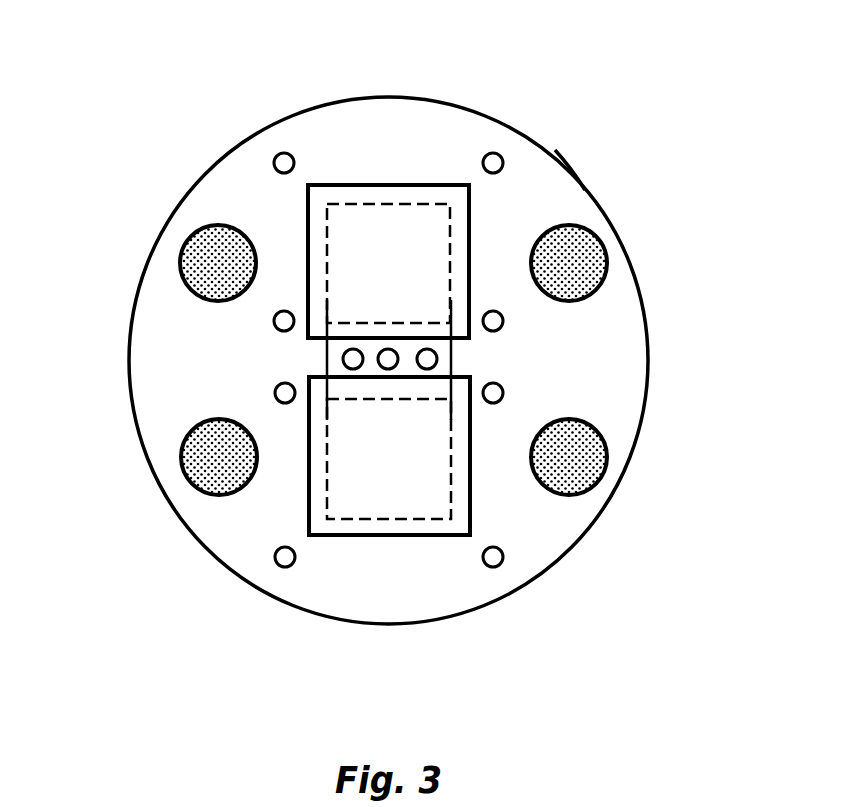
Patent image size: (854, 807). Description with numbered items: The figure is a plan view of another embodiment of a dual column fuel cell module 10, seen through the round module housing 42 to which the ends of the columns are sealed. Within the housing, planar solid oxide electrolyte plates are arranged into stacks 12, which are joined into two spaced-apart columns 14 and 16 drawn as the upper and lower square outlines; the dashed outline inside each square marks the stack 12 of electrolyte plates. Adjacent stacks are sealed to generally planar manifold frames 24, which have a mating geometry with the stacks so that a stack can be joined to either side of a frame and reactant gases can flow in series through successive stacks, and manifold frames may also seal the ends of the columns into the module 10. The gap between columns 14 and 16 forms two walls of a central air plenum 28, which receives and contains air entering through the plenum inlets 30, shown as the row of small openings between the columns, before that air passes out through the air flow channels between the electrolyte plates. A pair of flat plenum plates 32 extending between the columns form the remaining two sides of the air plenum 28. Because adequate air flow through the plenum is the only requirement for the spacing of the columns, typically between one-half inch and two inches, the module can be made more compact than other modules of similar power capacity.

The dual column fuel cell module 10 is at (670, 343).
The stack 12 is at (415, 203).
The column 14 is at (421, 175).
The column 16 is at (408, 470).
The manifold frame 24 is at (350, 185).
The central air plenum 28 is at (366, 370).
The plenum inlet 30 is at (427, 370).
The plenum plate 32 is at (327, 357).
The module housing 42 is at (568, 172).